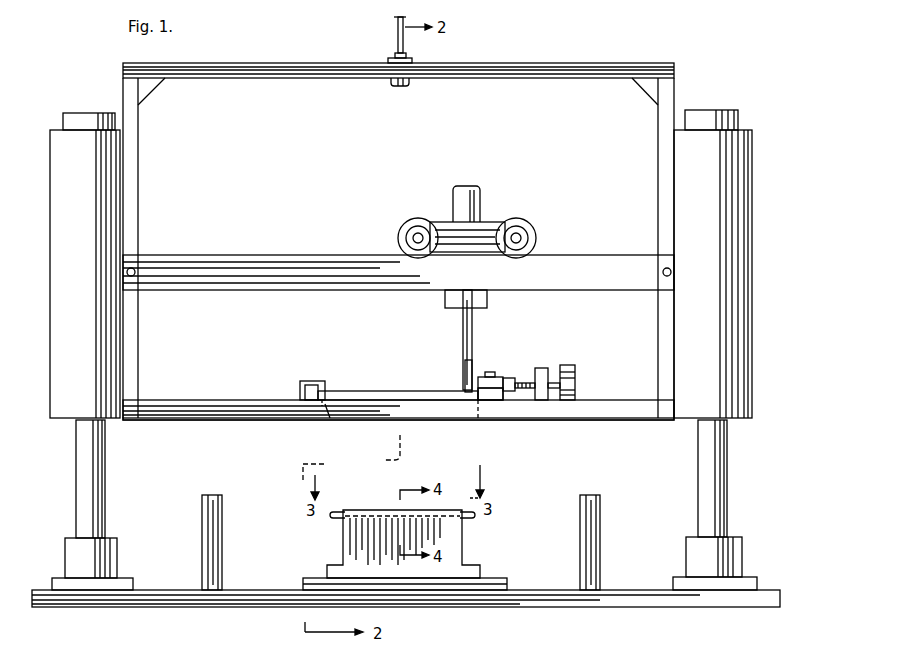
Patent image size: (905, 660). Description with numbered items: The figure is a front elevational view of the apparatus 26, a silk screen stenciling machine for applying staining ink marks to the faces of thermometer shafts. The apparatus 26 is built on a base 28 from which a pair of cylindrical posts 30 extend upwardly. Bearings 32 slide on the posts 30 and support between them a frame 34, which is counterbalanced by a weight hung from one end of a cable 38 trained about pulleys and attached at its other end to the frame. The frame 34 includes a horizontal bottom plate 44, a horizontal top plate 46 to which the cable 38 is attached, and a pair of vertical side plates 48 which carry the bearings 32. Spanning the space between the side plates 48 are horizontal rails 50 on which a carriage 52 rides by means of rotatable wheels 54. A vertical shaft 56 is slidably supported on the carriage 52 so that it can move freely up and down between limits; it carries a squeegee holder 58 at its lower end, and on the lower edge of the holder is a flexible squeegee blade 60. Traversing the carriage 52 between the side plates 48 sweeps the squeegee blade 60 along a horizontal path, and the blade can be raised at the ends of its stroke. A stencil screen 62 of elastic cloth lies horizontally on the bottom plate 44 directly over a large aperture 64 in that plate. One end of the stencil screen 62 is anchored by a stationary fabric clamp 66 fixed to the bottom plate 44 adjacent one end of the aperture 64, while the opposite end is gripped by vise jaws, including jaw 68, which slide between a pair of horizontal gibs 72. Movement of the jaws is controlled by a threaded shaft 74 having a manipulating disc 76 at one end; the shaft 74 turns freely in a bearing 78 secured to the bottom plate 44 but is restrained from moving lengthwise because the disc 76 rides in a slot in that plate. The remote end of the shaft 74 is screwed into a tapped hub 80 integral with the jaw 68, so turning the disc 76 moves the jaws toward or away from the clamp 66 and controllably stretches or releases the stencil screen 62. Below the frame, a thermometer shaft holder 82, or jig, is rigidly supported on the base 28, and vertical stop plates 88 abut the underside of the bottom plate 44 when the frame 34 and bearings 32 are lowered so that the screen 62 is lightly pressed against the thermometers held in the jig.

The apparatus 26 is at (97, 617).
The base 28 is at (193, 598).
The cylindrical posts 30 is at (100, 502).
The bearings 32 is at (52, 323).
The frame 34 is at (218, 420).
The cable 38 is at (398, 43).
The bottom plate 44 is at (266, 420).
The top plate 46 is at (281, 76).
The side plates 48 is at (135, 200).
The horizontal rails 50 is at (229, 285).
The carriage 52 is at (493, 228).
The rotatable wheels 54 is at (404, 224).
The vertical shaft 56 is at (478, 196).
The squeegee holder 58 is at (463, 336).
The squeegee blade 60 is at (468, 384).
The stencil screen 62 is at (356, 392).
The aperture 64 is at (334, 419).
The fabric clamp 66 is at (310, 380).
The vise jaw 68 is at (483, 375).
The horizontal gibs 72 is at (497, 398).
The threaded shaft 74 is at (526, 380).
The manipulating disc 76 is at (572, 368).
The bearing 78 is at (545, 370).
The tapped hub 80 is at (510, 376).
The thermometer shaft holder 82 is at (458, 542).
The stop plates 88 is at (210, 553).